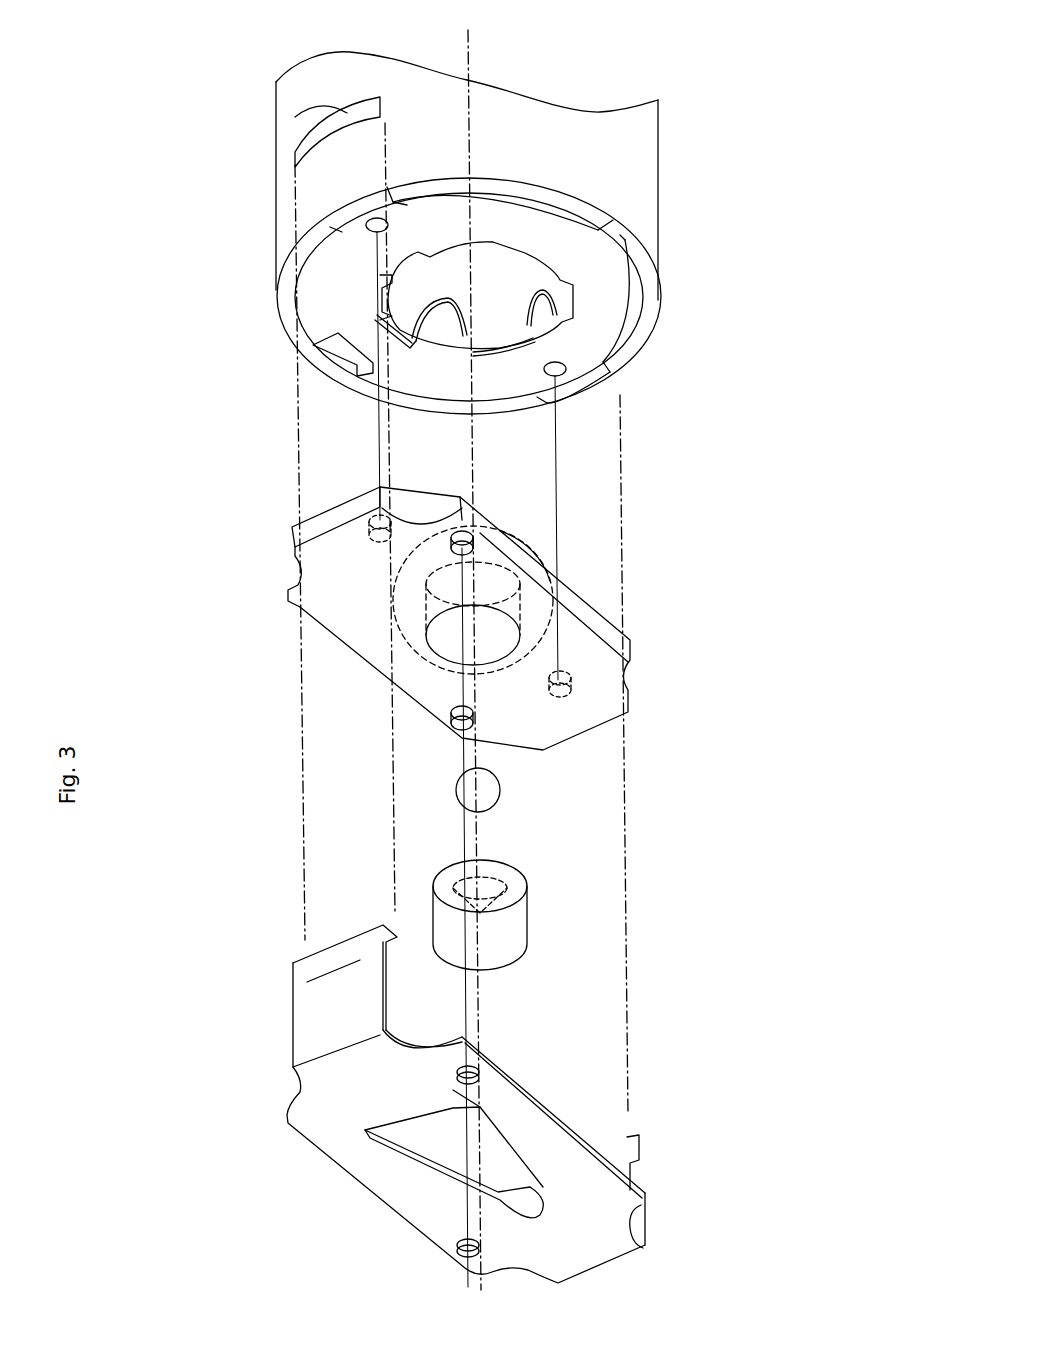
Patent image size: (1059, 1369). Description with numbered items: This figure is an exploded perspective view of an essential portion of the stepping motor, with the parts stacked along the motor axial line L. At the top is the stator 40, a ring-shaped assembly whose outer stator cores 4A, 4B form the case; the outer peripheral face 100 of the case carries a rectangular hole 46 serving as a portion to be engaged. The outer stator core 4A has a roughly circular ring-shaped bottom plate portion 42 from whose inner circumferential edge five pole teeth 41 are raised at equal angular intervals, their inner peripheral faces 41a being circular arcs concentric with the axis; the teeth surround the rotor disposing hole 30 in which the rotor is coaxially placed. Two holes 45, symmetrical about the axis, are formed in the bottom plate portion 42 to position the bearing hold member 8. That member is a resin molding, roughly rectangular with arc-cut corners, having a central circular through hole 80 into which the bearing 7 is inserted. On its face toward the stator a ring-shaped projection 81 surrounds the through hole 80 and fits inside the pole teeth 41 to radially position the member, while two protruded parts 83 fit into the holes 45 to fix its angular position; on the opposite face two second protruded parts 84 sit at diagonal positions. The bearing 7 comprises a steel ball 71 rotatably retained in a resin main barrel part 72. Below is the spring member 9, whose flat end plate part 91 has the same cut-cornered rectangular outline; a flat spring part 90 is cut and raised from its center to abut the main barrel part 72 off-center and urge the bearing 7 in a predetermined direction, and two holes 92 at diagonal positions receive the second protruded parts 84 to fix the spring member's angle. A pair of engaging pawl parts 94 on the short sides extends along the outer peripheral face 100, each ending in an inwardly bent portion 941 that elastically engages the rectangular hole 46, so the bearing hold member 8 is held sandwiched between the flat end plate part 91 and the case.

The motor axial line L is at (468, 63).
The outer peripheral face 100 is at (630, 133).
The rectangular hole 46 is at (300, 113).
The hole 45 is at (366, 228).
The outer stator core 4B is at (645, 208).
The outer stator core 4A is at (605, 272).
The bottom plate portion 42 is at (330, 300).
The stator 40 is at (272, 335).
The rotor disposing hole 30 is at (510, 287).
The pole teeth 41 is at (540, 320).
The inner peripheral faces 41a is at (504, 347).
The bearing hold member 8 is at (632, 627).
The protruded parts 83 is at (380, 514).
The second protruded parts 84 is at (462, 530).
The ring-shaped projection 81 is at (527, 528).
The through hole 80 is at (497, 667).
The bearing 7 is at (533, 869).
The steel ball 71 is at (493, 793).
The main barrel part 72 is at (514, 915).
The spring member 9 is at (459, 1123).
The engaging pawl parts 94 is at (330, 1008).
The bent portion 941 is at (400, 940).
The flat end plate part 91 is at (553, 1245).
The flat spring part 90 is at (433, 1147).
The holes 92 is at (475, 1065).